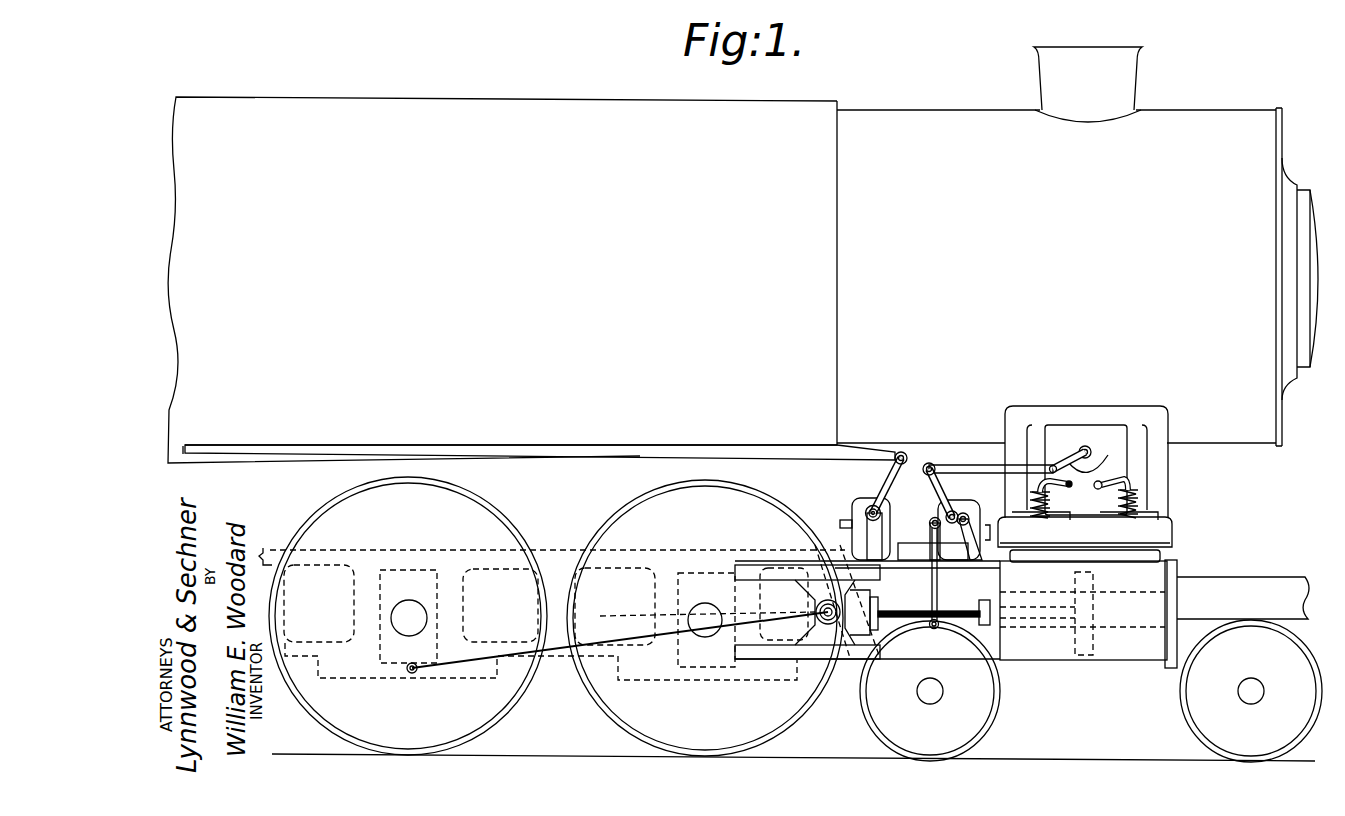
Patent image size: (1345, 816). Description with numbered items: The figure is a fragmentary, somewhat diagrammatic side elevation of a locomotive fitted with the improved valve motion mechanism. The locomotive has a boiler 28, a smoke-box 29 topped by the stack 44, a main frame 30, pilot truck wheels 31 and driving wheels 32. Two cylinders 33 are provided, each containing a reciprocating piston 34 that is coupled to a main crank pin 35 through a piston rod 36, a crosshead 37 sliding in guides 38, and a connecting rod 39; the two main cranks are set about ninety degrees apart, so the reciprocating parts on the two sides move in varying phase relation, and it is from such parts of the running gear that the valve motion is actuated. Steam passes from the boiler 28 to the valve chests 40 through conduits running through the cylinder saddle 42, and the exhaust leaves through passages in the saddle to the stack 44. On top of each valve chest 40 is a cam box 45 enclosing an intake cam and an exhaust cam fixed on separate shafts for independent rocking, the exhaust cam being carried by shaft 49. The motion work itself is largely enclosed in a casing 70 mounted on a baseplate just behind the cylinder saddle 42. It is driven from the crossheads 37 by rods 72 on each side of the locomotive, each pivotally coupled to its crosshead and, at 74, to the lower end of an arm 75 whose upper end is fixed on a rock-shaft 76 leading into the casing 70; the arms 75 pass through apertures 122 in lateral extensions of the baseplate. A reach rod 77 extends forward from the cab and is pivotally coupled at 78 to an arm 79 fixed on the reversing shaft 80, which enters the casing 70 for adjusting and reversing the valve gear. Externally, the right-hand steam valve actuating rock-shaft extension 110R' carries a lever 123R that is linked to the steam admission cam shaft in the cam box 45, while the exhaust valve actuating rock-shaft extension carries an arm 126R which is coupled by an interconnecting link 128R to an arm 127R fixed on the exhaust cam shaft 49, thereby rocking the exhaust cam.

The boiler 28 is at (502, 280).
The smoke-box 29 is at (1077, 277).
The main frame 30 is at (1237, 585).
The pilot truck wheels 31 is at (1195, 718).
The driving wheels 32 is at (487, 712).
The cylinders 33 is at (1135, 652).
The reciprocating piston 34 is at (1085, 650).
The main crank pin 35 is at (411, 674).
The piston rod 36 is at (970, 616).
The crosshead 37 is at (830, 636).
The guides 38 is at (757, 648).
The connecting rod 39 is at (632, 642).
The valve chests 40 is at (1085, 539).
The cylinder saddle 42 is at (1158, 472).
The stack 44 is at (1120, 85).
The cam box 45 is at (1092, 432).
The exhaust cam shaft 49 is at (1080, 450).
The box or casing 70 is at (852, 538).
The rods or links 72 is at (918, 622).
The pivotal coupling 74 is at (935, 630).
The arms 75 is at (940, 592).
The rock-shaft 76 is at (930, 521).
The reversing rod or reach rod 77 is at (586, 461).
The pivotal coupling 78 is at (899, 452).
The arm 79 is at (888, 477).
The reversing shaft 80 is at (865, 510).
The external extension of right steam valve actuating rock-shaft 110R' is at (1016, 531).
The apertures 122 is at (899, 605).
The lever 123R is at (948, 478).
The lever or arm 126R is at (933, 497).
The arm 127R is at (1101, 461).
The interconnecting link 128R is at (968, 465).